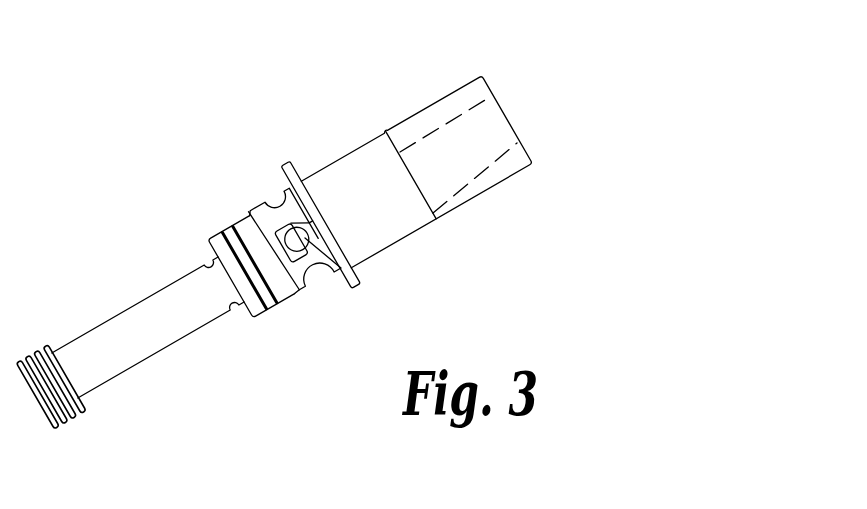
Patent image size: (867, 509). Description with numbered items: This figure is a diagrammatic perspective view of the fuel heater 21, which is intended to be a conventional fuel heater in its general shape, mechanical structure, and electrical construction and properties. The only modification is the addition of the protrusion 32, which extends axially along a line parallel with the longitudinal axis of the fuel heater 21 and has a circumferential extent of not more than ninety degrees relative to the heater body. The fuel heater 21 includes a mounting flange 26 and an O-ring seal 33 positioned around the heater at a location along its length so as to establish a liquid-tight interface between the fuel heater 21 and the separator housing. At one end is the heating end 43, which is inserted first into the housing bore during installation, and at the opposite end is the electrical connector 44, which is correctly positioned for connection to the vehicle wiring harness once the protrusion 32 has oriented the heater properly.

The fuel heater 21 is at (427, 136).
The mounting flange 26 is at (289, 163).
The protrusion 32 is at (312, 266).
The O-ring seal 33 is at (224, 229).
The heating end 43 is at (90, 330).
The electrical connector 44 is at (496, 129).